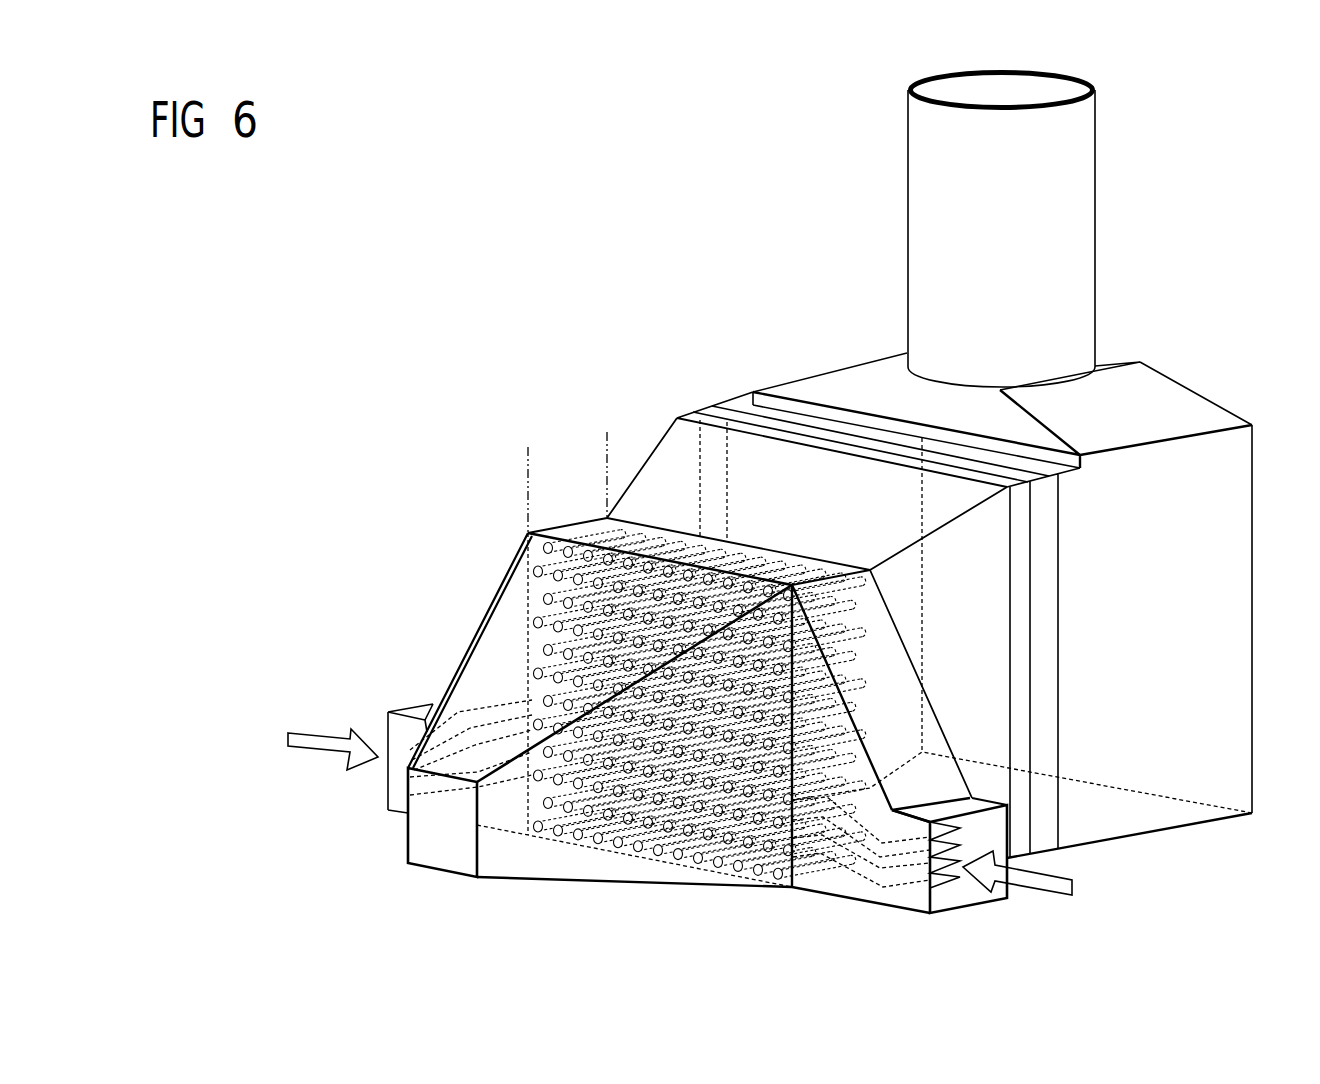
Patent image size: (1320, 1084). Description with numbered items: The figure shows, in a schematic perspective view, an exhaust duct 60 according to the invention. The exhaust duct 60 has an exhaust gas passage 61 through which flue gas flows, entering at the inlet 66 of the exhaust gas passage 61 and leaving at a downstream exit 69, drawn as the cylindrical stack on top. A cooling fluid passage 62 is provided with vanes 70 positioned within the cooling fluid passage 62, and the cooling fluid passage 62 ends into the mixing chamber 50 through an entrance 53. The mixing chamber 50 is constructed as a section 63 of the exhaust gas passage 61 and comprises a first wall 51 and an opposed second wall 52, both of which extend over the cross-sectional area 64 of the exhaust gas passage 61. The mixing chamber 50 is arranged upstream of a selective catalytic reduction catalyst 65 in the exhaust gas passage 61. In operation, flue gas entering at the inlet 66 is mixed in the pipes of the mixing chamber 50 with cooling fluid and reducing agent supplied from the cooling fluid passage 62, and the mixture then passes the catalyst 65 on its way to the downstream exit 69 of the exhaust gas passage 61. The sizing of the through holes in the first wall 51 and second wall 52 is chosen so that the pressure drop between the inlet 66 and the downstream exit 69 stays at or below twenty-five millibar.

The mixing chamber 50 is at (450, 668).
The first wall 51 is at (547, 557).
The second wall 52 is at (763, 547).
The entrance 53 is at (982, 833).
The exhaust duct 60 is at (628, 302).
The exhaust gas passage 61 is at (979, 622).
The cooling fluid passage 62 is at (387, 725).
The section 63 is at (565, 467).
The cross-sectional area 64 is at (535, 610).
The selective catalytic reduction catalyst 65 is at (747, 418).
The inlet 66 is at (433, 837).
The downstream exit 69 is at (1043, 90).
The vanes 70 is at (503, 712).